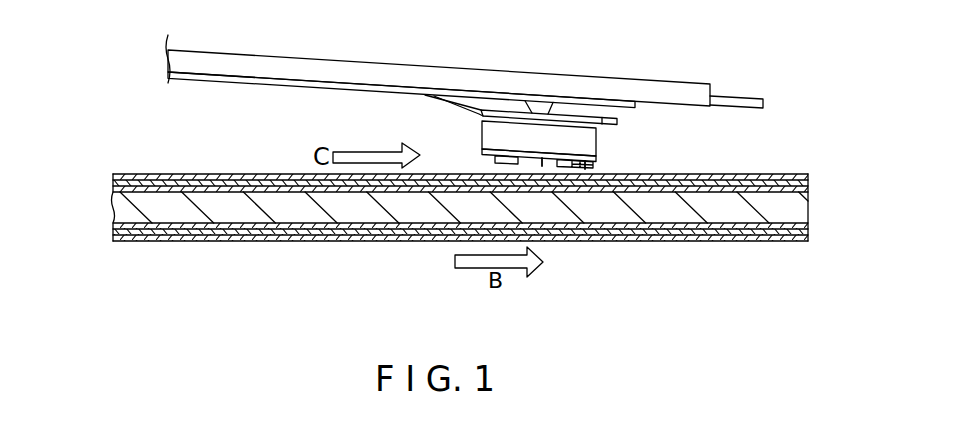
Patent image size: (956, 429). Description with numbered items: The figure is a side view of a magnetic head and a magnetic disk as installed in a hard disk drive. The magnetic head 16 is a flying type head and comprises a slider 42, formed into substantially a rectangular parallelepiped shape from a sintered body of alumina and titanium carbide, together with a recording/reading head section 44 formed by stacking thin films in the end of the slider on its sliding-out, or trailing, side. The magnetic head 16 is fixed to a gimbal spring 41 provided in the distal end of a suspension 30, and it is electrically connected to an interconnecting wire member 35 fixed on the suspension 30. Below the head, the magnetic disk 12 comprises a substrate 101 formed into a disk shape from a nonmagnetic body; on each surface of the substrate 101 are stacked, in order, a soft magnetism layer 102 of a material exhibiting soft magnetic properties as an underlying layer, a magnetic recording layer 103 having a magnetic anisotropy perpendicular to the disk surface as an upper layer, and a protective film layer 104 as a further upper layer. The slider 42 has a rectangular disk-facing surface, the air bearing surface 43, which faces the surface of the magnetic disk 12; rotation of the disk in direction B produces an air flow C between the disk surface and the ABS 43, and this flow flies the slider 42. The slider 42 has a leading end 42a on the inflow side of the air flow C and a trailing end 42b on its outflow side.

The magnetic disk 12 is at (148, 157).
The magnetic head 16 is at (458, 137).
The suspension 30 is at (288, 67).
The interconnecting wire member 35 is at (222, 82).
The gimbal spring 41 is at (508, 112).
The slider 42 is at (563, 130).
The leading end 42a is at (480, 130).
The trailing end 42b is at (597, 146).
The disk-facing surface (air bearing surface) 43 is at (542, 164).
The recording/reading head section 44 is at (585, 166).
The substrate 101 is at (243, 213).
The soft magnetism layer 102 is at (118, 196).
The magnetic recording layer 103 is at (173, 175).
The protective film layer 104 is at (115, 173).